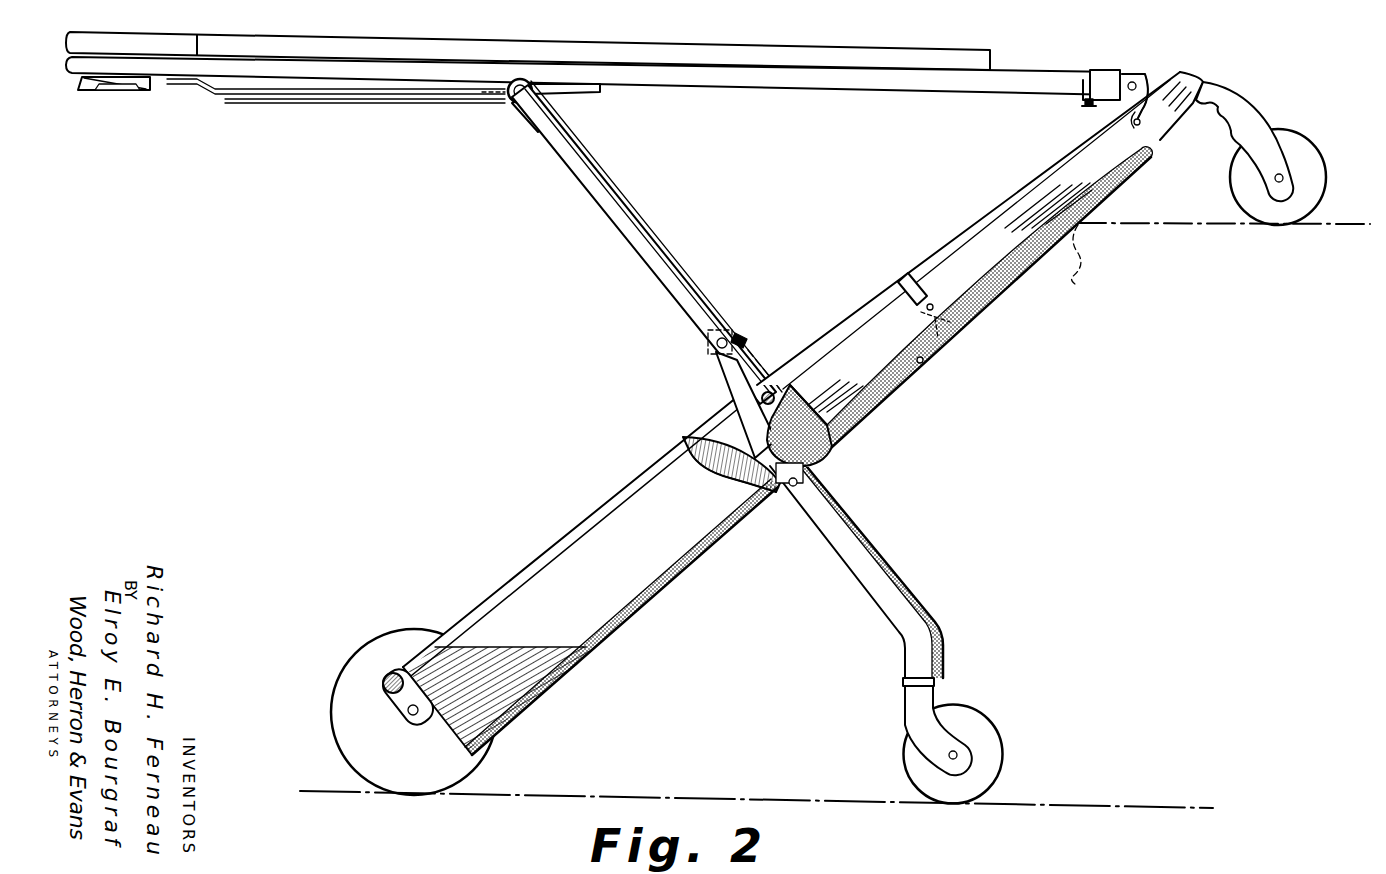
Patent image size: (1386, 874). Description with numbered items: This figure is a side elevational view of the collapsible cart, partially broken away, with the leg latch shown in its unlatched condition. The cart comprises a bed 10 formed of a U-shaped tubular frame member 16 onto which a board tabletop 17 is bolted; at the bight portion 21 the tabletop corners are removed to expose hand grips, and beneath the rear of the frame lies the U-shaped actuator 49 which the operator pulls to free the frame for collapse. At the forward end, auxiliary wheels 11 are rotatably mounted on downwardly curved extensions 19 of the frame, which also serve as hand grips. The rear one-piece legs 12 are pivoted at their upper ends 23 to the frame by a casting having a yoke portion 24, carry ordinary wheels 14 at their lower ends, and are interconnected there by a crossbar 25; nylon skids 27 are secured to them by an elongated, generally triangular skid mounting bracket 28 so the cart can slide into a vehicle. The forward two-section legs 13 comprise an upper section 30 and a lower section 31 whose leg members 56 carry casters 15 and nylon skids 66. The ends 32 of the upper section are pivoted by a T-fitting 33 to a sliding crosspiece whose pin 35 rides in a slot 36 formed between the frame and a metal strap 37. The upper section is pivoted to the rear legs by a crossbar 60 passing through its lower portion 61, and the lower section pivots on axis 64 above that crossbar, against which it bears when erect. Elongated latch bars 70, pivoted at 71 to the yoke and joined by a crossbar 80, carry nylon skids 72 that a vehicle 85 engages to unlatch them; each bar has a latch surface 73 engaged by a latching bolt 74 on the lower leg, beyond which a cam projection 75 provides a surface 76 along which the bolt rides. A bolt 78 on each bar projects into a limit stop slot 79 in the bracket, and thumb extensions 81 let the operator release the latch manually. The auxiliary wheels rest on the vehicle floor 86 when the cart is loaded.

The bed 10 is at (593, 61).
The auxiliary wheels 11 is at (1317, 177).
The rear one-piece legs 12 is at (578, 572).
The forward two-section legs 13 is at (760, 348).
The wheels 14 is at (362, 745).
The casters 15 is at (1010, 735).
The U-shaped tubular frame member 16 is at (448, 67).
The board tabletop 17 is at (640, 53).
The downwardly curved extensions 19 is at (1234, 96).
The bight portion 21 is at (67, 75).
The upper ends of rear legs 23 is at (1133, 82).
The yoke portion 24 is at (1148, 88).
The crossbar 25 is at (380, 668).
The nylon skids 27 is at (695, 557).
The skid mounting bracket 28 is at (517, 658).
The upper section of forward legs 30 is at (660, 250).
The lower section of forward legs 31 is at (871, 618).
The ends of upper leg section 32 is at (538, 130).
The T-fitting 33 is at (522, 118).
The pin 35 is at (482, 107).
The slot 36 is at (423, 92).
The metal strap 37 is at (433, 107).
The U-shaped actuator 49 is at (127, 90).
The leg members 56 is at (930, 618).
The crossbar 60 is at (778, 387).
The lower portion of upper leg section 61 is at (999, 247).
The pivot axis 64 is at (718, 357).
The nylon skids 66 is at (877, 545).
The latch bars 70 is at (996, 259).
The pivot of latch bar 71 is at (1140, 126).
The nylon skids 72 is at (923, 363).
The latch surface 73 is at (808, 466).
The latching bolt 74 is at (795, 487).
The cam projection 75 is at (713, 469).
The cam surface 76 is at (723, 487).
The bolt 78 is at (934, 304).
The limit stop slot 79 is at (921, 331).
The crossbar 80 is at (903, 274).
The extensions 81 is at (1195, 72).
The vehicle 85 is at (1077, 285).
The floor of vehicle 86 is at (1218, 220).